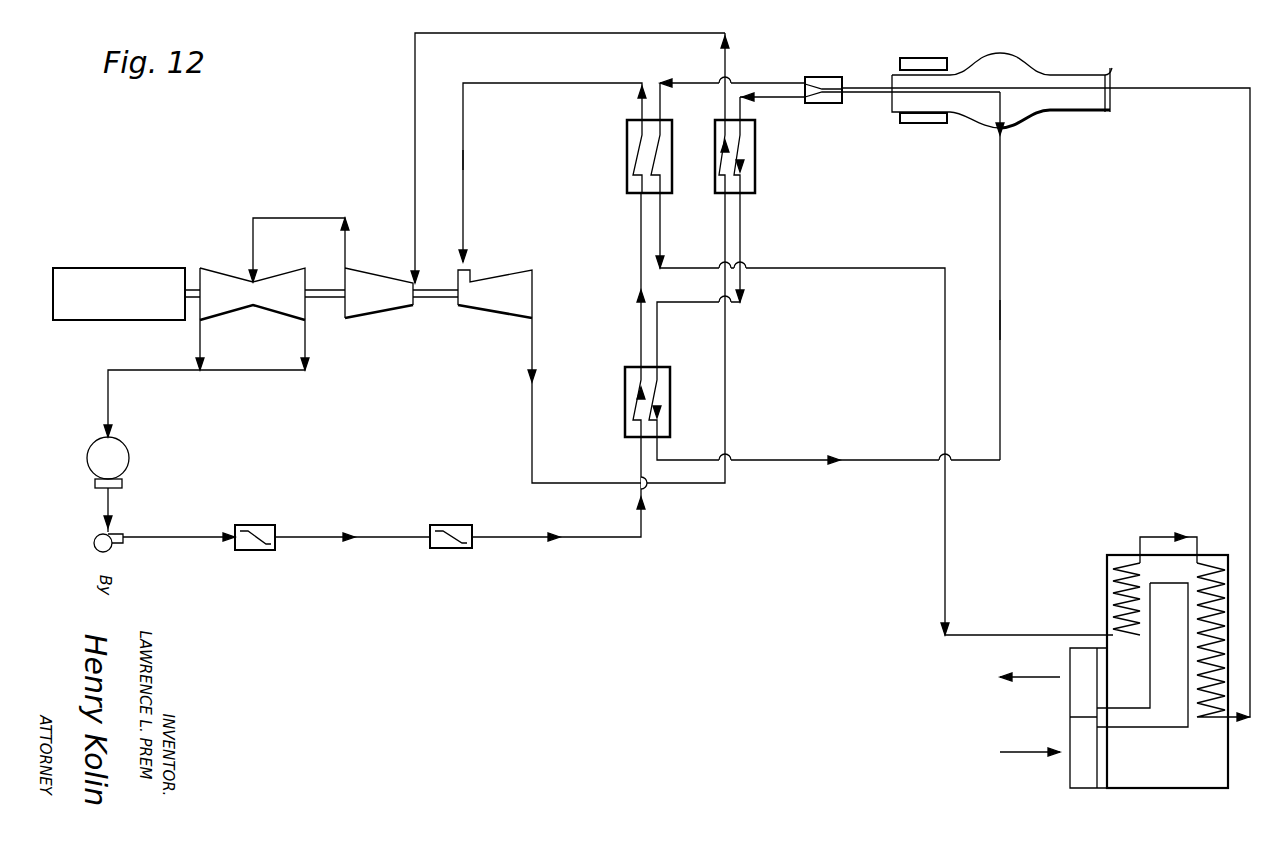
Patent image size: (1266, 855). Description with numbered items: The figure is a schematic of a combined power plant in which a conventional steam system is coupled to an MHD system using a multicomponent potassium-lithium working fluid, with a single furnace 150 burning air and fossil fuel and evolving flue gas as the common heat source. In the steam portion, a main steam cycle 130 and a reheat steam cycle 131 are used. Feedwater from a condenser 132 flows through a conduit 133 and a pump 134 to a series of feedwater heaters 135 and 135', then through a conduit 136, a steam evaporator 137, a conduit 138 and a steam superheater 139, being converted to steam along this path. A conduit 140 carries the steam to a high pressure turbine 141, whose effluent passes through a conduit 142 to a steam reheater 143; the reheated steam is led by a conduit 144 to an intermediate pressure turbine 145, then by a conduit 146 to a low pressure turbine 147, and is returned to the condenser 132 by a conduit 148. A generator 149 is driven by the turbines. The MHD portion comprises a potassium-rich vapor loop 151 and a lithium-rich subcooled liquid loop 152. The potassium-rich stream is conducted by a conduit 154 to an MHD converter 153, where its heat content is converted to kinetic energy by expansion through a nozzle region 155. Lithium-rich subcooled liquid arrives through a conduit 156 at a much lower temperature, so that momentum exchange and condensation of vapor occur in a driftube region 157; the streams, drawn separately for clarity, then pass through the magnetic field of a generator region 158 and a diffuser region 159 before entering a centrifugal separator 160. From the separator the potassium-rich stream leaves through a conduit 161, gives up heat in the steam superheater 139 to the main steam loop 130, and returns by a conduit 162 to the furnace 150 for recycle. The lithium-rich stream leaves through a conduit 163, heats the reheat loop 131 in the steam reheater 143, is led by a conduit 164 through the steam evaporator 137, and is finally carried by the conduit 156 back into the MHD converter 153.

The main steam cycle 130 is at (552, 107).
The reheat steam cycle 131 is at (478, 56).
The condenser 132 is at (118, 462).
The conduit 133 is at (112, 522).
The pump 134 is at (112, 550).
The feedwater heater 135 is at (332, 524).
The feedwater heater 135' is at (538, 492).
The conduit 136 is at (641, 466).
The steam evaporator 137 is at (626, 412).
The conduit 138 is at (641, 322).
The steam superheater 139 is at (627, 165).
The conduit 140 is at (463, 157).
The high pressure turbine 141 is at (532, 288).
The conduit 142 is at (535, 373).
The steam reheater 143 is at (755, 170).
The conduit 144 is at (715, 33).
The intermediate pressure turbine 145 is at (370, 318).
The conduit 146 is at (305, 218).
The low pressure turbine 147 is at (292, 308).
The conduit 148 is at (108, 390).
The generator 149 is at (112, 268).
The furnace 150 is at (1175, 790).
The potassium-rich vapor loop 151 is at (1220, 162).
The lithium-rich subcooled liquid loop 152 is at (1055, 324).
The MHD converter 153 is at (1099, 68).
The conduit 154 is at (1190, 90).
The nozzle region 155 is at (1110, 112).
The conduit 156 is at (1000, 203).
The driftube region 157 is at (1020, 118).
The generator region 158 is at (928, 118).
The diffuser region 159 is at (893, 75).
The separator 160 is at (812, 77).
The conduit 161 is at (738, 83).
The conduit 162 is at (775, 268).
The conduit 163 is at (768, 97).
The conduit 164 is at (722, 302).